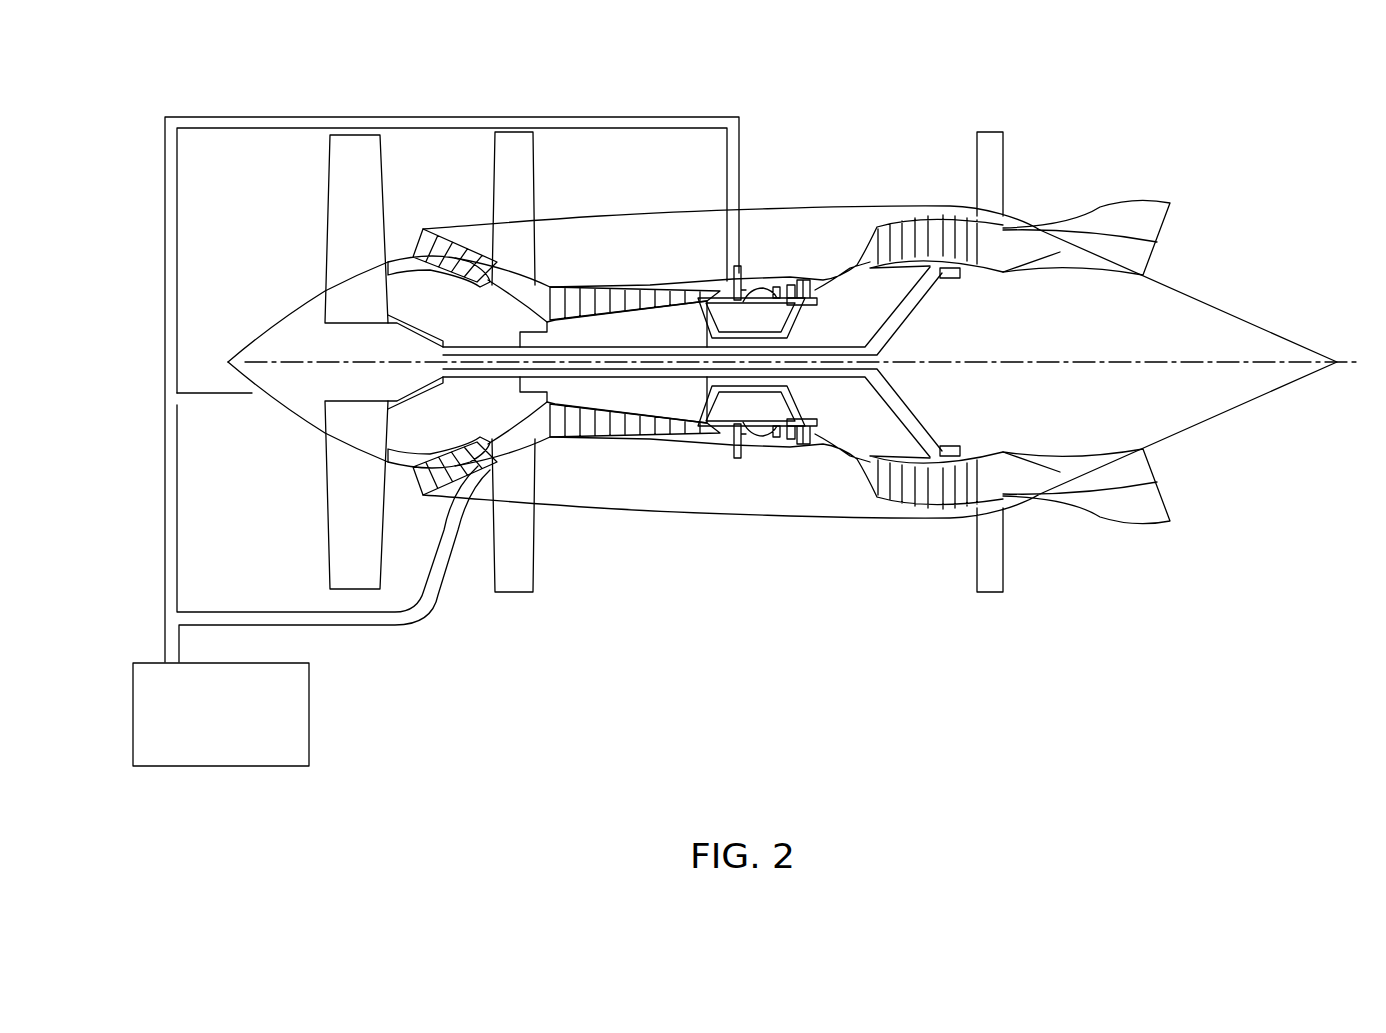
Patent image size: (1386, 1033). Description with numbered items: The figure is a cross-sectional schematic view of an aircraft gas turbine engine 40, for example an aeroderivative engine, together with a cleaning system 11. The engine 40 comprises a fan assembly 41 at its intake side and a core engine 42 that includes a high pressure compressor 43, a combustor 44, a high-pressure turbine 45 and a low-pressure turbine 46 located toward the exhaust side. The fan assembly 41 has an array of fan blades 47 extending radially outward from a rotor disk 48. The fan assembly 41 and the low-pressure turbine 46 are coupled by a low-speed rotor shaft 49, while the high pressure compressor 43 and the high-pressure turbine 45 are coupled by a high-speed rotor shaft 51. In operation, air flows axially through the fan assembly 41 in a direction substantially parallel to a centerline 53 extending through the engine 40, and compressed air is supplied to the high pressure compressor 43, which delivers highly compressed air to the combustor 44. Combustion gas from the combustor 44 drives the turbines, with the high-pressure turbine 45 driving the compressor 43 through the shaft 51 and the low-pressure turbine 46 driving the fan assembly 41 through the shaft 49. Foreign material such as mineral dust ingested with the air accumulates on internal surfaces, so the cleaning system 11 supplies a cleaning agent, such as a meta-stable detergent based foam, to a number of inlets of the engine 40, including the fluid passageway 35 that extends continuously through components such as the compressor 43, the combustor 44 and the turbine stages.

The cleaning system 11 is at (309, 712).
The fluid passageway 35 is at (447, 292).
The aircraft gas turbine engine 40 is at (799, 312).
The fan assembly 41 is at (398, 93).
The core engine 42 is at (718, 268).
The high pressure compressor 43 is at (557, 272).
The combustor 44 is at (748, 265).
The high-pressure turbine 45 is at (795, 458).
The low-pressure turbine 46 is at (920, 540).
The fan blades 47 is at (367, 187).
The rotor disk 48 is at (312, 467).
The low-speed rotor shaft 49 is at (648, 385).
The high-speed rotor shaft 51 is at (590, 405).
The centerline 53 is at (1357, 360).